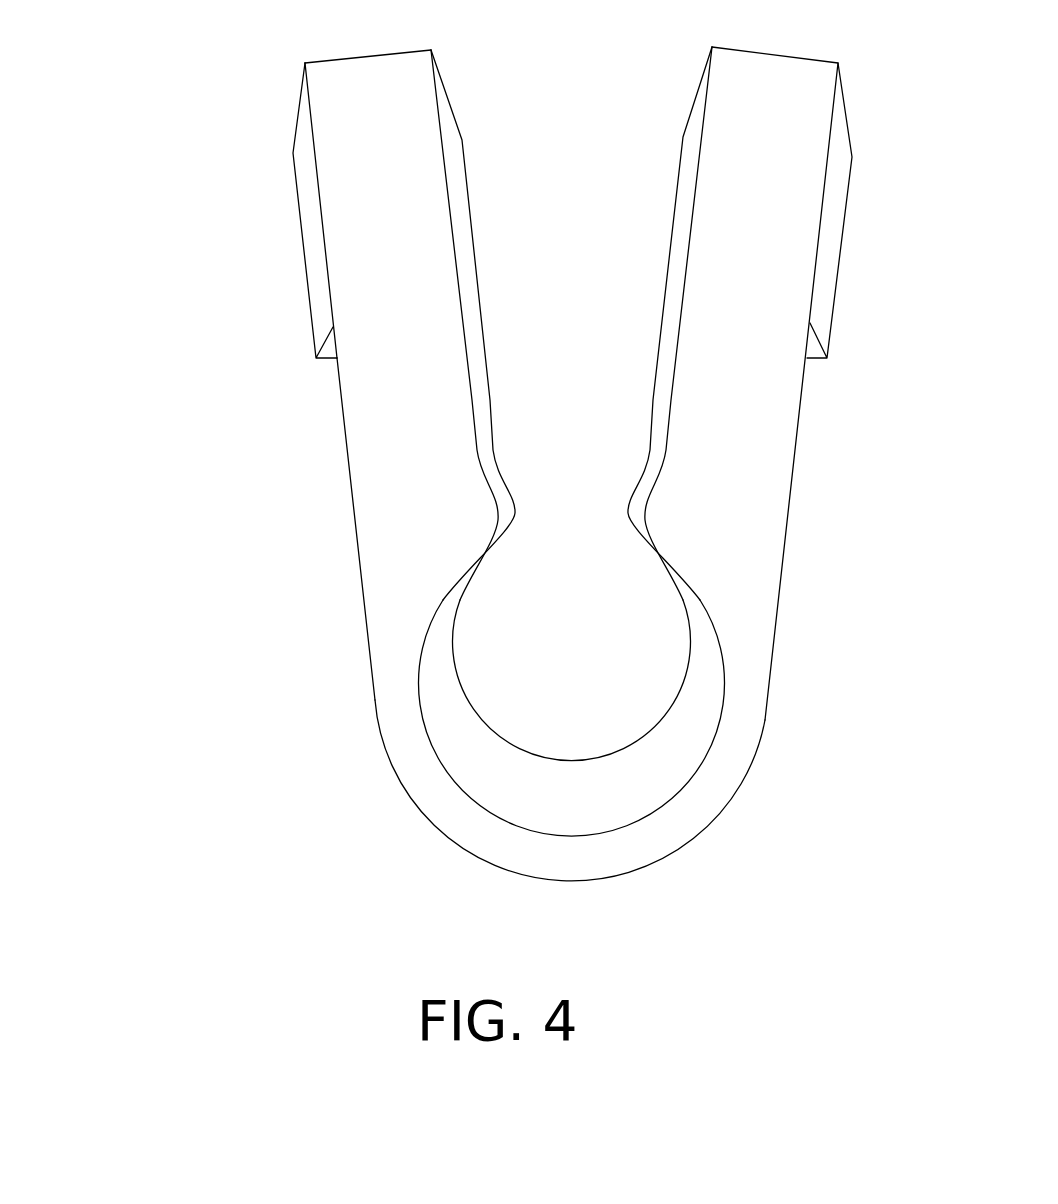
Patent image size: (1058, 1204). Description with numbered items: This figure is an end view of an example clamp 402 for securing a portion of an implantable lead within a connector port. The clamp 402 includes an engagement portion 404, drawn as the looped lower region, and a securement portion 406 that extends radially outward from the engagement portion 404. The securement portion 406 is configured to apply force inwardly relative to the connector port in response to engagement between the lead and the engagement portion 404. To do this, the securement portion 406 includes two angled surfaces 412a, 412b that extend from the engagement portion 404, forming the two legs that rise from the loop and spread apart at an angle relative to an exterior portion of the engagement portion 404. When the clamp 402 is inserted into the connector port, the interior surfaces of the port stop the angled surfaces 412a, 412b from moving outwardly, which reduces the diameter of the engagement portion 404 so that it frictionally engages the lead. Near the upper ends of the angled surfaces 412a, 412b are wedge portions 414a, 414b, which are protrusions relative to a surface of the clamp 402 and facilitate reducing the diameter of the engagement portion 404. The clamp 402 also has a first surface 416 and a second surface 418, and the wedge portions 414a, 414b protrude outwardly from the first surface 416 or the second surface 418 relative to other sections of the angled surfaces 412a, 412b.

The clamp 402 is at (157, 82).
The engagement portion 404 is at (427, 728).
The securement portion 406 is at (327, 75).
The angled surface 412a is at (360, 517).
The angled surface 412b is at (788, 522).
The wedge portion 414a is at (317, 295).
The wedge portion 414b is at (837, 300).
The first surface 416 is at (343, 162).
The second surface 418 is at (348, 422).